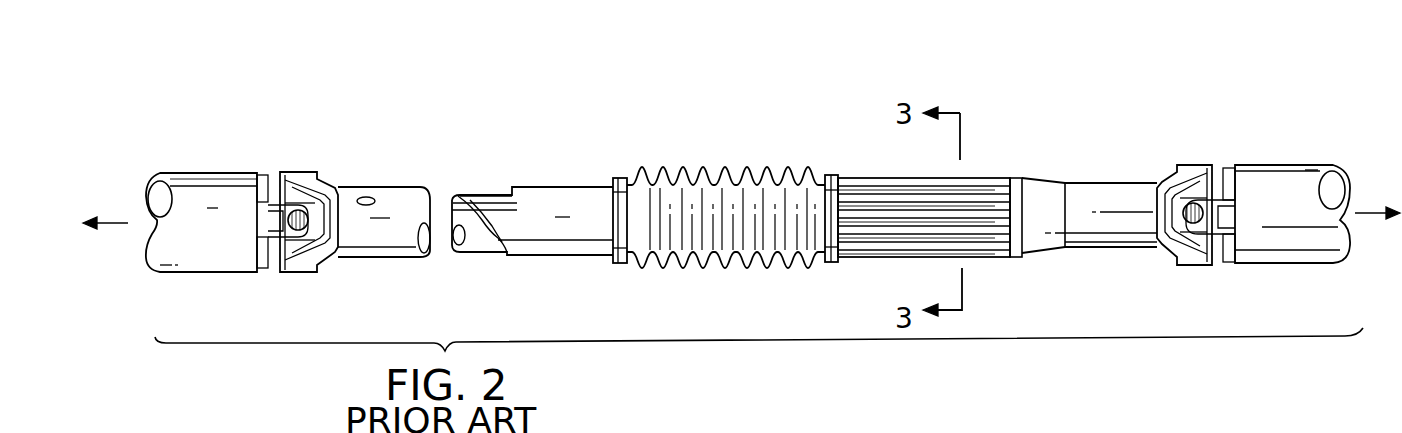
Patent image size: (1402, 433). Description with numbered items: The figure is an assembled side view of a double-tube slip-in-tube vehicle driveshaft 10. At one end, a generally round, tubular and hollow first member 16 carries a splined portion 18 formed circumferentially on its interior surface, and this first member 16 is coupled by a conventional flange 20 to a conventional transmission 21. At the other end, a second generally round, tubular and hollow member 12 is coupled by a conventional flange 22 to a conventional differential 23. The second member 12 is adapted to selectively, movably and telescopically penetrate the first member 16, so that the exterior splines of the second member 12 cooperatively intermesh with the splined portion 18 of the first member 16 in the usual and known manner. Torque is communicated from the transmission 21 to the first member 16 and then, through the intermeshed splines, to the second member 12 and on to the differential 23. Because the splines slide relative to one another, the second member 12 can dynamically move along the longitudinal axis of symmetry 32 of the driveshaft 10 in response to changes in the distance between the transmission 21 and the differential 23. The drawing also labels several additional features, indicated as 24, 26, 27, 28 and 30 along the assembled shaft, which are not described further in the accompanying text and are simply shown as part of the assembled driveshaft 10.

The vehicle driveshaft 10 is at (802, 63).
The second member 12 is at (572, 202).
The first member 16 is at (1104, 200).
The splined portion 18 is at (878, 205).
The flange 20 is at (1190, 163).
The transmission 21 is at (1286, 186).
The flange 22 is at (296, 170).
The differential 23 is at (210, 194).
The end of shaft 24 is at (490, 203).
The boot 26 is at (726, 180).
The convolutions 27 is at (692, 168).
The collar 28 is at (620, 264).
The collar 30 is at (826, 264).
The longitudinal axis of symmetry 32 is at (1365, 212).